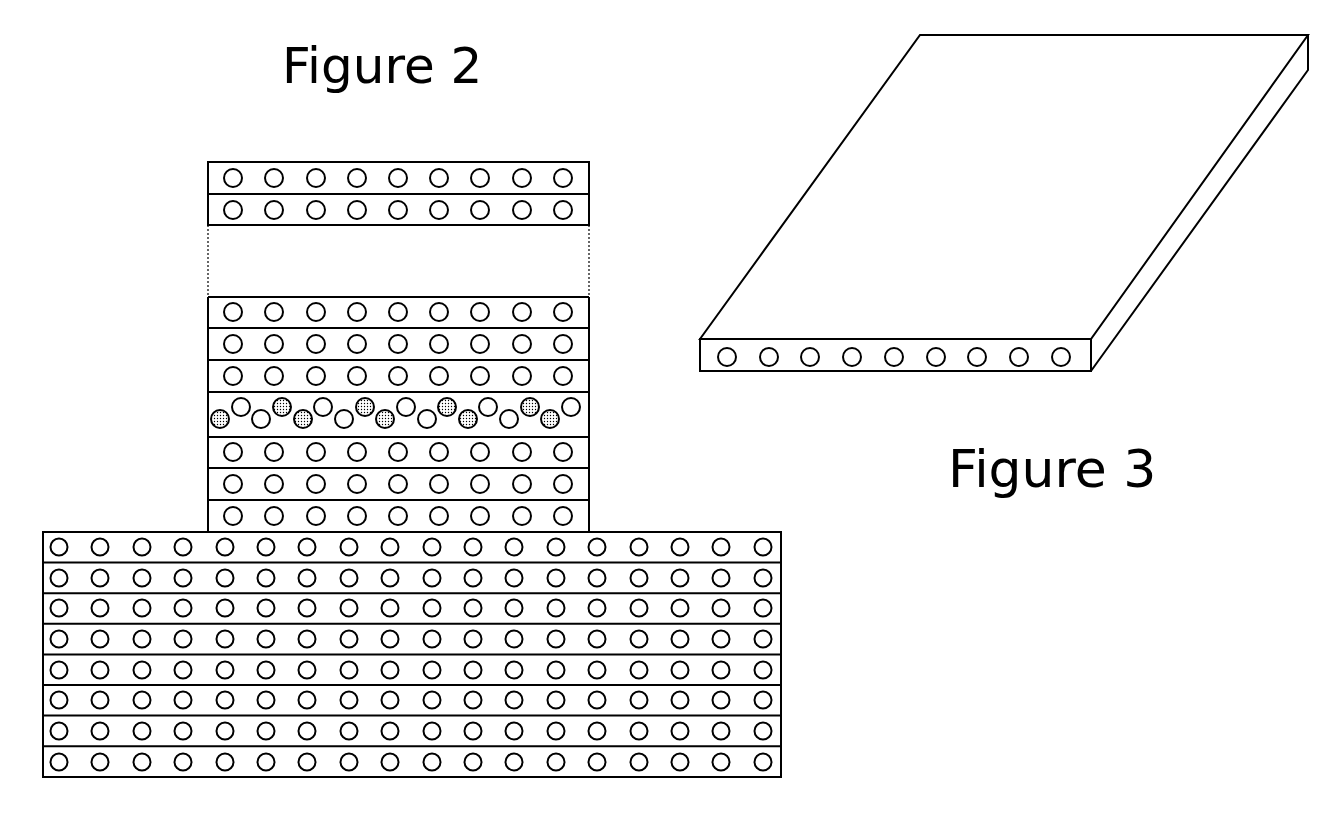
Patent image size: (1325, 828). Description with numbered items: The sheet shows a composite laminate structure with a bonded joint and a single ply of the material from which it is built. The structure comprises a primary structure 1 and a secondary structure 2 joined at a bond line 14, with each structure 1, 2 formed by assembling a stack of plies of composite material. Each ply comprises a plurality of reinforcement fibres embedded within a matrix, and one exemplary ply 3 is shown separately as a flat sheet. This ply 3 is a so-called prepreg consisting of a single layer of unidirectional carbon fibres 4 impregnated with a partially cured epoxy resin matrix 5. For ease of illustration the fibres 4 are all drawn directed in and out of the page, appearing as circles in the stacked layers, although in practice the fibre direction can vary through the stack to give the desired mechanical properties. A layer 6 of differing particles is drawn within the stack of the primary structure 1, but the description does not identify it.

In FIG. 2, the primary structure 1 is at (178, 366).
In FIG. 2, the secondary structure 2 is at (803, 665).
In FIG. 2, the layer with catalyst particles 6 is at (215, 404).
In FIG. 2, the bond line 14 is at (575, 530).
In FIG. 3, the ply 3 is at (920, 119).
In FIG. 3, the carbon fibres 4 is at (727, 360).
In FIG. 3, the epoxy resin matrix 5 is at (787, 350).